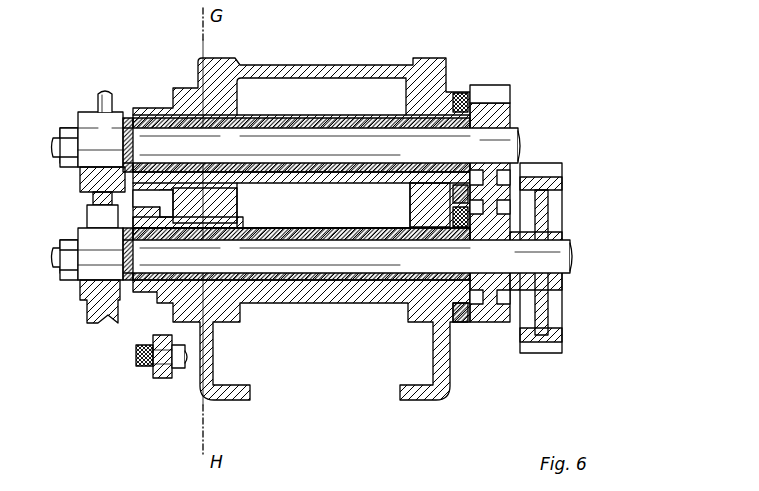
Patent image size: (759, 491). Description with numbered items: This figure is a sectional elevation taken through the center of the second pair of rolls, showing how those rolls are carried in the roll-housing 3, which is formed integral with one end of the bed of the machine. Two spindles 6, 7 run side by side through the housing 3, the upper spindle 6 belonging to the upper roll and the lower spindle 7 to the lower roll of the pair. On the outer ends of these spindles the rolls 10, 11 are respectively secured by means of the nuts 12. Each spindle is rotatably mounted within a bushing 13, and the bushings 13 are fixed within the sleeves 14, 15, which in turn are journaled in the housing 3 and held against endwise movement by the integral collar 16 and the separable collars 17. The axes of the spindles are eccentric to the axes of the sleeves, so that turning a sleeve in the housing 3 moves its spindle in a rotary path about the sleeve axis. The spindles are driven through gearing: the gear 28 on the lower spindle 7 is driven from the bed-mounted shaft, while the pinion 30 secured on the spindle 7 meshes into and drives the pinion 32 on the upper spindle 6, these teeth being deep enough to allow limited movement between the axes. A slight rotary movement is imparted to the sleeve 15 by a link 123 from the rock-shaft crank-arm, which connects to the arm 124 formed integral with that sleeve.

The roll-housing 3 is at (300, 65).
The spindle 6 is at (508, 146).
The spindle 7 is at (560, 257).
The roll 10 is at (96, 92).
The roll 11 is at (90, 312).
The nut 12 is at (62, 166).
The bushing 13 is at (222, 122).
The sleeve 14 is at (310, 119).
The sleeve 15 is at (298, 230).
The integral collar 16 is at (163, 108).
The separable collar 17 is at (463, 94).
The gear 28 is at (556, 318).
The pinion 30 is at (503, 323).
The pinion 32 is at (511, 93).
The link 123 is at (142, 366).
The arm 124 is at (165, 378).